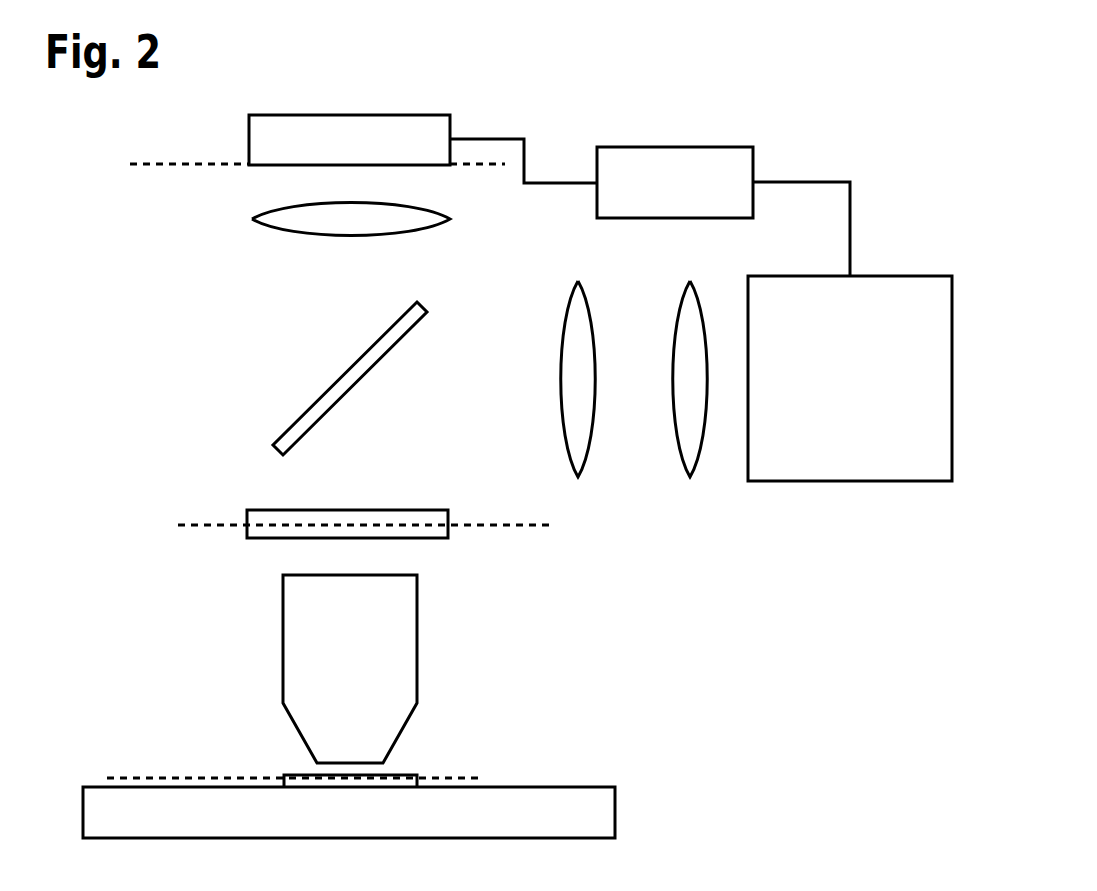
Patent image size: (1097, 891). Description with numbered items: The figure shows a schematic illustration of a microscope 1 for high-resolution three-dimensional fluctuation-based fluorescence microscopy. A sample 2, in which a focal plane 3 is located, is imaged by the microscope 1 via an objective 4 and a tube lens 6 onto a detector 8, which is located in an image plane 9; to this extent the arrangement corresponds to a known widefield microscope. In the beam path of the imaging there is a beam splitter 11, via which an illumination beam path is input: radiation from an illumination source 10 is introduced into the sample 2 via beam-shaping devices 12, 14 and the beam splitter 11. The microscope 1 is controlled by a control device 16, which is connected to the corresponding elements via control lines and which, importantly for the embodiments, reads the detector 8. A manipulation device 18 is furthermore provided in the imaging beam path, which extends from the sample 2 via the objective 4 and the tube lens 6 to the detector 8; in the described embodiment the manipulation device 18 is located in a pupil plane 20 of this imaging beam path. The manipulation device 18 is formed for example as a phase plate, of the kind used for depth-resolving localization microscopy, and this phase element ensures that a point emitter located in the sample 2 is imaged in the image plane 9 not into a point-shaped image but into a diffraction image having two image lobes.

The microscope 1 is at (678, 627).
The sample 2 is at (300, 775).
The focal plane 3 is at (127, 778).
The objective 4 is at (297, 665).
The tube lens 6 is at (250, 219).
The detector 8 is at (431, 128).
The image plane 9 is at (153, 167).
The illumination source 10 is at (833, 463).
The beam splitter 11 is at (365, 365).
The beam-shaping device 12 is at (572, 322).
The beam-shaping device 14 is at (695, 452).
The control device 16 is at (717, 187).
The manipulation device 18 is at (443, 530).
The pupil plane 20 is at (218, 522).